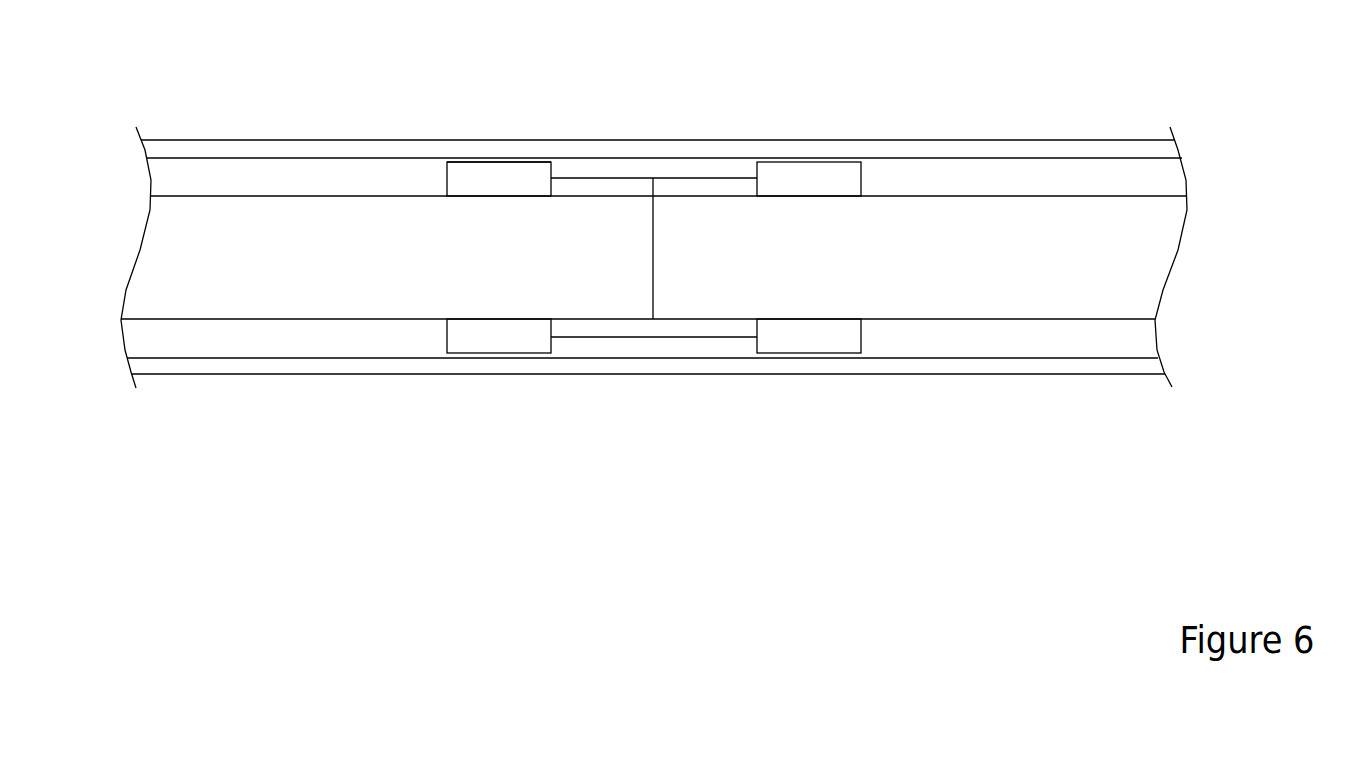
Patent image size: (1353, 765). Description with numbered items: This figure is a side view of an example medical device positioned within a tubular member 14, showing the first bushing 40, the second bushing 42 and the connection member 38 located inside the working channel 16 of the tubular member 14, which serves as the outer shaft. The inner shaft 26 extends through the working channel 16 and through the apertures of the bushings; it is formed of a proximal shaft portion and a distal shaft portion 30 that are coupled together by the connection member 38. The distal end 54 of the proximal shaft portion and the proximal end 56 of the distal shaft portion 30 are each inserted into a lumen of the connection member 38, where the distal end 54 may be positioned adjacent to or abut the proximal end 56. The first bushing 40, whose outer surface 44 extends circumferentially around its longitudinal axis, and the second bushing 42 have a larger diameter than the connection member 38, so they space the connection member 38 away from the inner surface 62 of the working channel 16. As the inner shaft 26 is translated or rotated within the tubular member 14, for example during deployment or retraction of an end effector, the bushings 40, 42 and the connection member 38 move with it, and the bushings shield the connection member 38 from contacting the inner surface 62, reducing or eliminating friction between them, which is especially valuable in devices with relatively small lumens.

The tubular member 14 is at (1035, 140).
The working channel 16 is at (325, 344).
The shaft 26 is at (212, 326).
The distal shaft portion 30 is at (926, 323).
The connection member 38 is at (653, 178).
The first bushing 40 is at (447, 177).
The second bushing 42 is at (861, 176).
The outer surface 44 is at (497, 162).
The distal end 54 is at (629, 302).
The proximal end 56 is at (672, 302).
The inner surface 62 is at (214, 157).